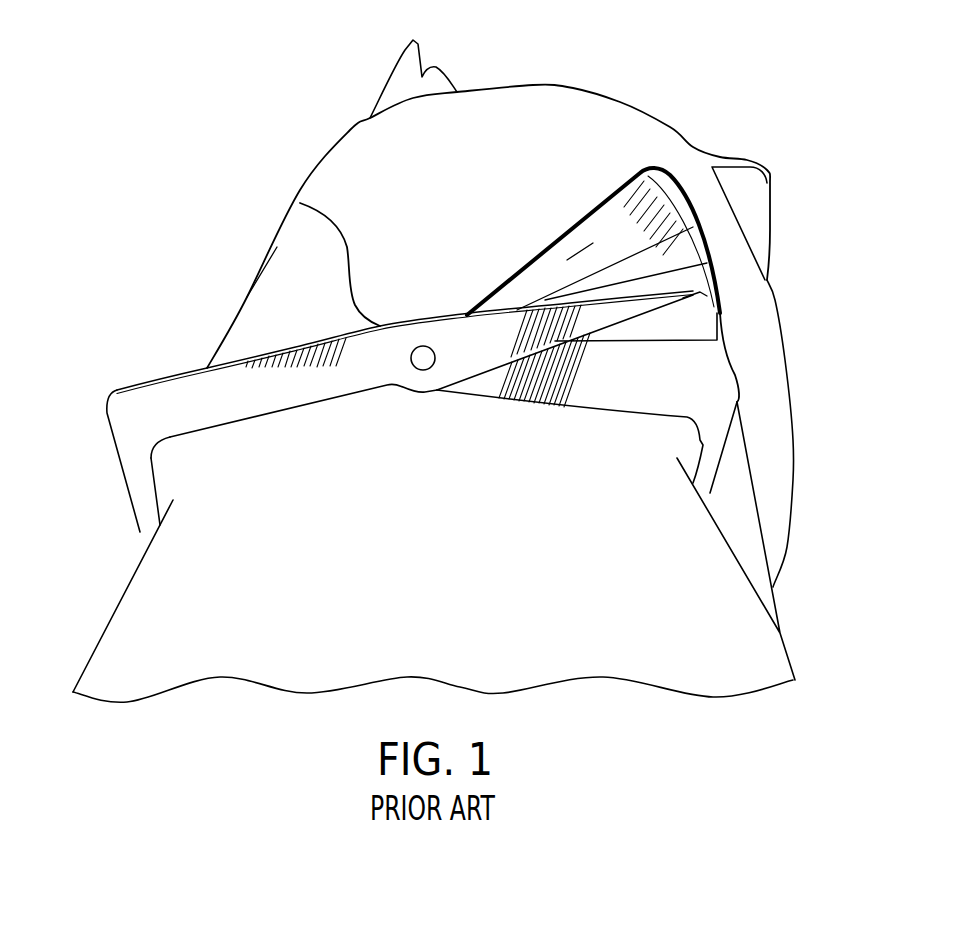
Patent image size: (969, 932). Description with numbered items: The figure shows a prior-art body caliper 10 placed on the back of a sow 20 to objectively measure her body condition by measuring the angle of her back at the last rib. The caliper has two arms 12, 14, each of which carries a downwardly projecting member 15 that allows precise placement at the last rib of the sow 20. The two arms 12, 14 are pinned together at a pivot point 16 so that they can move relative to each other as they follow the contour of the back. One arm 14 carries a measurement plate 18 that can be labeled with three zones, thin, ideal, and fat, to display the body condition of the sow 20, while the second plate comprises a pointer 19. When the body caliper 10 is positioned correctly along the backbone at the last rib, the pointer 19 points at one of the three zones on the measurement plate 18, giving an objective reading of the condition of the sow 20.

The body caliper 10 is at (446, 350).
The arm 12 is at (133, 410).
The arm 14 is at (710, 383).
The downwardly projecting member 15 is at (147, 523).
The pivot point 16 is at (418, 353).
The measurement plate 18 is at (733, 245).
The pointer 19 is at (707, 296).
The sow 20 is at (407, 140).